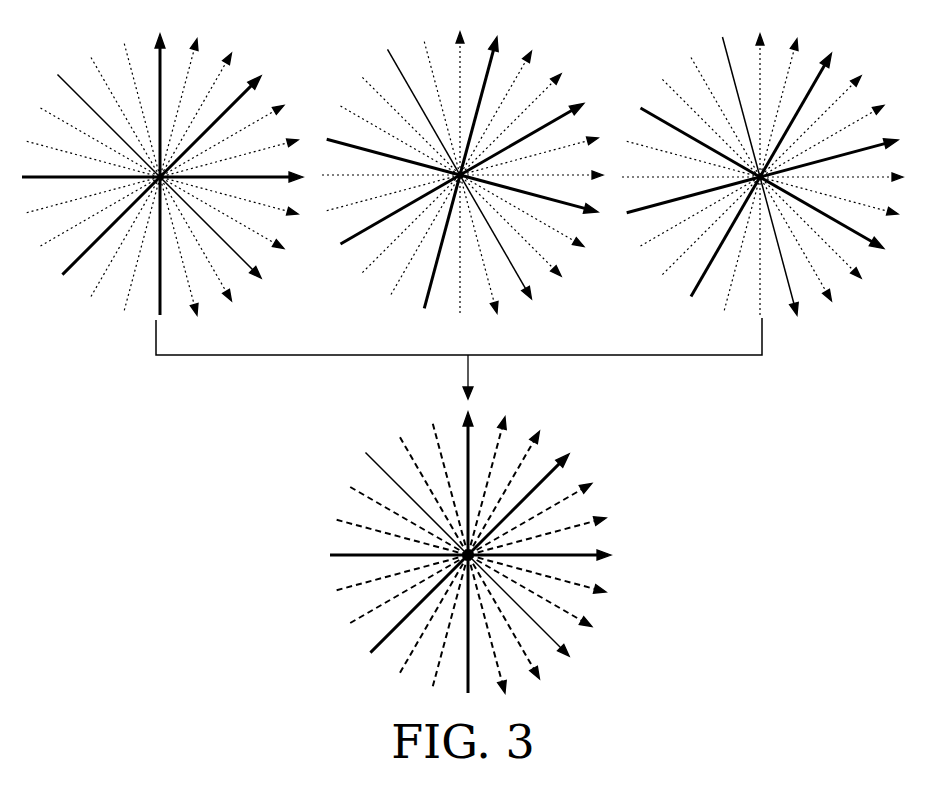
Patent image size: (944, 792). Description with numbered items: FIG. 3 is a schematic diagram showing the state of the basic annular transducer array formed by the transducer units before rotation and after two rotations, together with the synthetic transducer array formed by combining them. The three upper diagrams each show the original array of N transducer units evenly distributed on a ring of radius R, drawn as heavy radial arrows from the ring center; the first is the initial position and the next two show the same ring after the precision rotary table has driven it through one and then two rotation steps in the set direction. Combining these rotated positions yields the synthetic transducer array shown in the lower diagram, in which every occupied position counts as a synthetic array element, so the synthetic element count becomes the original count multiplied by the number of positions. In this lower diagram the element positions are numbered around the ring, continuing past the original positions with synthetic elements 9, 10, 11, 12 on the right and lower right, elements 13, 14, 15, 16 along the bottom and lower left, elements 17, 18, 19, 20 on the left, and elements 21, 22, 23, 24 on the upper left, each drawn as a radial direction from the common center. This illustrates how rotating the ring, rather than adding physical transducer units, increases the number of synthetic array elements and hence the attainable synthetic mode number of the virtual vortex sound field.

The direction 9 is at (530, 590).
The direction 10 is at (518, 605).
The direction 11 is at (503, 617).
The direction 12 is at (487, 624).
The direction 13 is at (468, 624).
The direction 14 is at (450, 621).
The direction 15 is at (433, 615).
The direction 16 is at (419, 604).
The direction 17 is at (408, 589).
The direction 18 is at (401, 573).
The direction 19 is at (399, 555).
The direction 20 is at (401, 537).
The direction 21 is at (408, 520).
The direction 22 is at (416, 503).
The direction 23 is at (433, 495).
The direction 24 is at (450, 488).